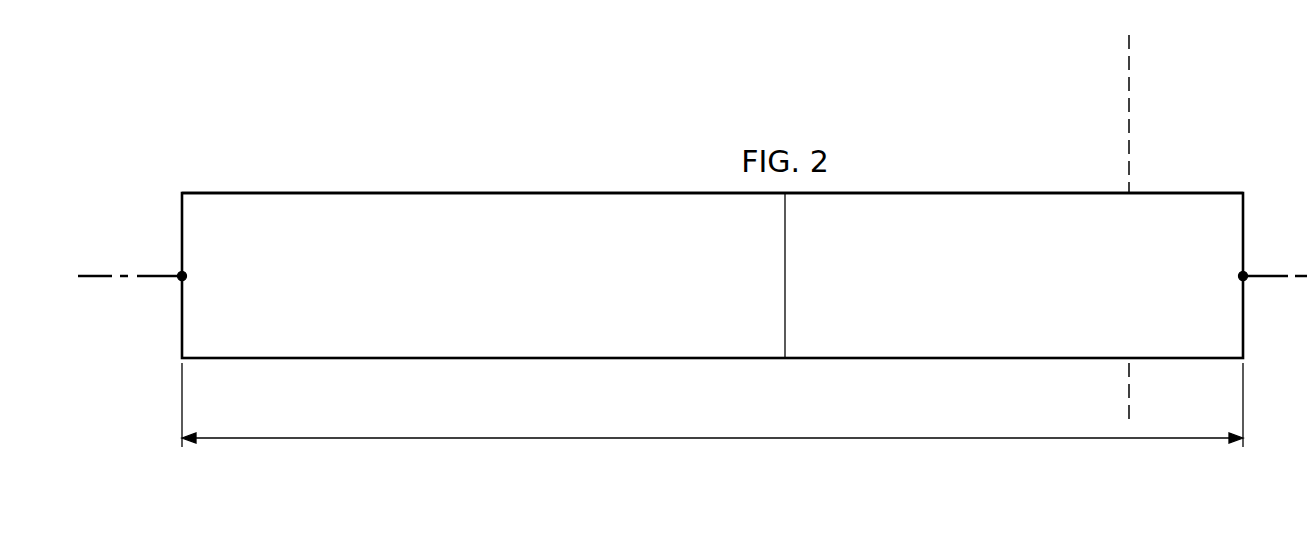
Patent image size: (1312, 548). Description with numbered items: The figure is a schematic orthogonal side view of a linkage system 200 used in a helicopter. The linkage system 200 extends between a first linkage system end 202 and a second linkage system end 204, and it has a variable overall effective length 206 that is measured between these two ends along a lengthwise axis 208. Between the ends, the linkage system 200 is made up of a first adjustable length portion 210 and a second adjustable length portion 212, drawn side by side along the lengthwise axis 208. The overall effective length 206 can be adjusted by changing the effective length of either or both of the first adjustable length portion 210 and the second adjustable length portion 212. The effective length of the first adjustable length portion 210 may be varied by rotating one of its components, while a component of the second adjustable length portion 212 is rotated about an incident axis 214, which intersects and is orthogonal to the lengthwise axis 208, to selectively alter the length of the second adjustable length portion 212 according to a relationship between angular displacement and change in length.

The linkage system 200 is at (578, 79).
The first linkage system end 202 is at (177, 281).
The second linkage system end 204 is at (1247, 280).
The overall effective length 206 is at (722, 440).
The lengthwise axis 208 is at (97, 273).
The first adjustable length portion 210 is at (482, 202).
The second adjustable length portion 212 is at (1016, 201).
The incident axis 214 is at (1130, 89).